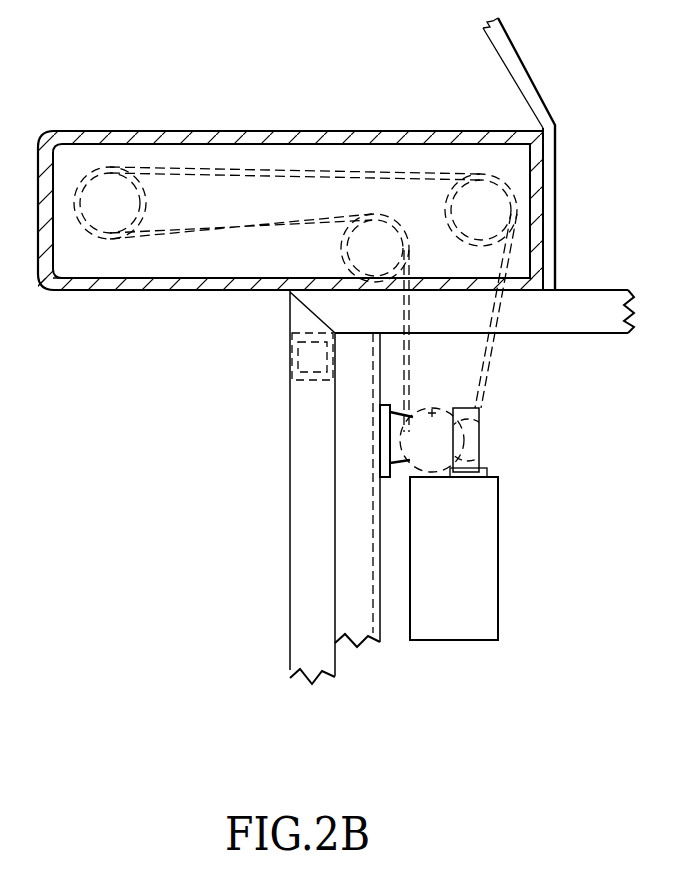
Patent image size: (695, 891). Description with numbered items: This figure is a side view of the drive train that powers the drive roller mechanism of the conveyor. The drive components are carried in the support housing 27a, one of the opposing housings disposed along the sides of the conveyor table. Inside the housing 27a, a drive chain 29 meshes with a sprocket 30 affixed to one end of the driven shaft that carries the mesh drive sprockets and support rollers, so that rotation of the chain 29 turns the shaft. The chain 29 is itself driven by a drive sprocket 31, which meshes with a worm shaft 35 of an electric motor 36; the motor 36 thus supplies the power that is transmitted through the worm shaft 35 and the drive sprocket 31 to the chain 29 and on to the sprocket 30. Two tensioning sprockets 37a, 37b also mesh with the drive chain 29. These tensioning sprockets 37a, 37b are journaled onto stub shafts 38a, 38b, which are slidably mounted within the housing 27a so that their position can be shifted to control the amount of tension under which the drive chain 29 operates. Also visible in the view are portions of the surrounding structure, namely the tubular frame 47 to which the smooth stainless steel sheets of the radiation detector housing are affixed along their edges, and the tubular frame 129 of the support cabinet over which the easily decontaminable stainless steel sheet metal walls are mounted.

The support housing 27a is at (270, 133).
The drive chain 29 is at (496, 366).
The sprocket 30 is at (88, 180).
The drive sprocket 31 is at (431, 401).
The worm shaft 35 is at (480, 452).
The electric motor 36 is at (483, 538).
The tensioning sprocket 37a is at (337, 291).
The tensioning sprocket 37b is at (518, 195).
The stub shaft 38a is at (377, 247).
The stub shaft 38b is at (481, 212).
The tubular frame 47 is at (499, 43).
The tubular frame 129 is at (588, 325).